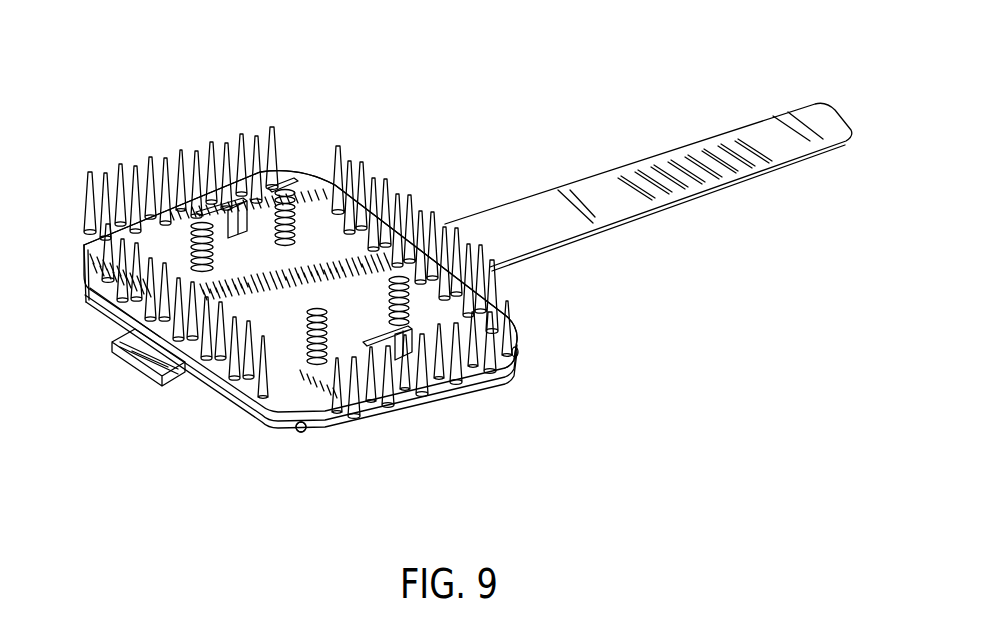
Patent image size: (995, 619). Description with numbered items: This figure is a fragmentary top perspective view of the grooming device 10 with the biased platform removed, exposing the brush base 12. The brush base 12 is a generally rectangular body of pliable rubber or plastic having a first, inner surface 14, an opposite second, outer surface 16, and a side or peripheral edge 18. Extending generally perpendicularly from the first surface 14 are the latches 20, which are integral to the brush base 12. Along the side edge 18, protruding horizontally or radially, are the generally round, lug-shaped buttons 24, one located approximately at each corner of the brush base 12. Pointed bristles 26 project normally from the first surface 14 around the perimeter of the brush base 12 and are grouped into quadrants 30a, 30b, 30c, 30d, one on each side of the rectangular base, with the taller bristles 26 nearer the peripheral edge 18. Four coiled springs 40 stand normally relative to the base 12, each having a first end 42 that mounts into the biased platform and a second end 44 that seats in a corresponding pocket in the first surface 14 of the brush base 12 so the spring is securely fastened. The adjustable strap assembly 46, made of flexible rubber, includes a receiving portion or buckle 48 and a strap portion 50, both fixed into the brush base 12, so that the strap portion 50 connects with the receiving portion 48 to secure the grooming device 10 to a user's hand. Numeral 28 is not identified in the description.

The grooming device 10 is at (150, 70).
The brush base 12 is at (340, 307).
The first, inner surface 14 is at (303, 178).
The second, outer surface 16 is at (203, 392).
The side or peripheral edge 18 is at (518, 330).
The latch 20 is at (283, 185).
The button 24 is at (304, 432).
The bristles 26 is at (150, 212).
The front edge 28 is at (137, 323).
The quadrant 30a is at (415, 228).
The quadrant 30b is at (233, 163).
The quadrant 30c is at (216, 372).
The quadrant 30d is at (402, 388).
The spring 40 is at (309, 273).
The first end 42 is at (305, 314).
The second end 44 is at (301, 432).
The adjustable strap assembly 46 is at (660, 160).
The receiving portion or buckle 48 is at (148, 382).
The strap portion 50 is at (740, 172).